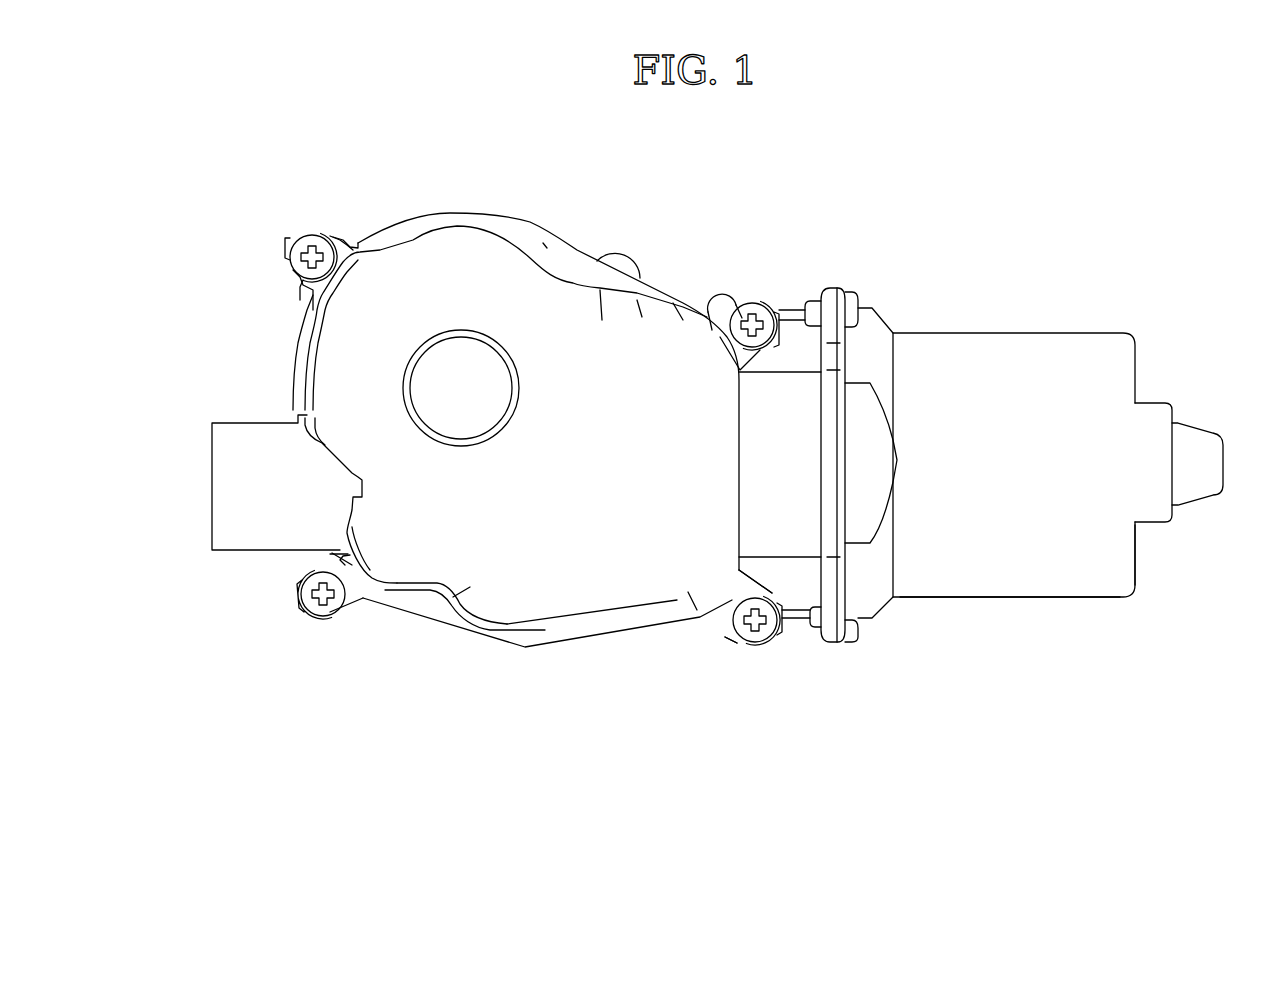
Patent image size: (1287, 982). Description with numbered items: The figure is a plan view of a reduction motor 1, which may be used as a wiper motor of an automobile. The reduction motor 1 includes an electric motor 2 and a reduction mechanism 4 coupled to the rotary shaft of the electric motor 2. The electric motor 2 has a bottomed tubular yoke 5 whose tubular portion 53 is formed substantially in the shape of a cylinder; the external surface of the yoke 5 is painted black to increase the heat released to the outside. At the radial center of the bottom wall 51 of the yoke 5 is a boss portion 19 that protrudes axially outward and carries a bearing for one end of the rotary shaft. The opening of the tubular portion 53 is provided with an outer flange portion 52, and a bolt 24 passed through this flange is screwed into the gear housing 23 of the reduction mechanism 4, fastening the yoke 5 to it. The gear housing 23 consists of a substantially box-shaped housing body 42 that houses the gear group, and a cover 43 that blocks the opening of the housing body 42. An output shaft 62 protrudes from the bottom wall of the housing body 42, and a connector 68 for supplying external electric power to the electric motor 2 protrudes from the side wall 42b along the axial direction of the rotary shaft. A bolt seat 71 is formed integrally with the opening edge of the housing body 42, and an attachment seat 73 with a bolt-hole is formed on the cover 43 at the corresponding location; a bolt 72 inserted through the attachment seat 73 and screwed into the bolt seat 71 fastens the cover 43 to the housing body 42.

The reduction motor 1 is at (900, 192).
The electric motor 2 is at (1027, 288).
The reduction mechanism 4 is at (531, 214).
The yoke 5 is at (1092, 328).
The boss portion 19 is at (1188, 425).
The gear housing 23 is at (581, 244).
The bolt 24 is at (856, 300).
The housing body 42 is at (478, 640).
The side wall 42b is at (660, 630).
The cover 43 is at (437, 265).
The bottom wall 51 is at (1140, 562).
The outer flange portion 52 is at (840, 645).
The tubular portion 53 is at (995, 600).
The output shaft 62 is at (406, 383).
The connector 68 is at (238, 552).
The bolt seat 71 is at (286, 245).
The bolt 72 is at (322, 244).
The attachment seat 73 is at (342, 242).